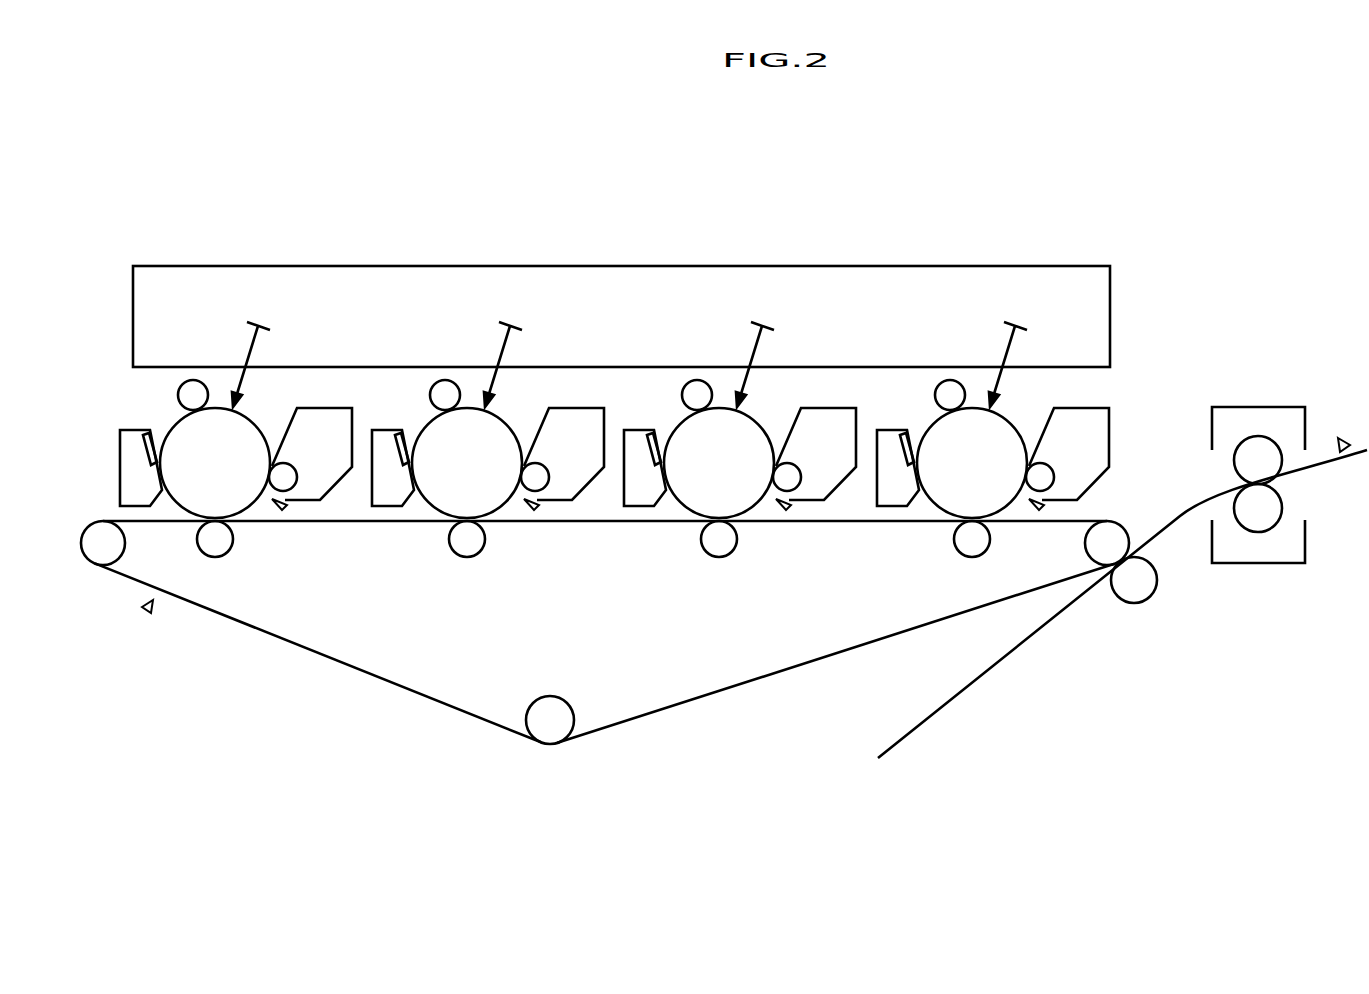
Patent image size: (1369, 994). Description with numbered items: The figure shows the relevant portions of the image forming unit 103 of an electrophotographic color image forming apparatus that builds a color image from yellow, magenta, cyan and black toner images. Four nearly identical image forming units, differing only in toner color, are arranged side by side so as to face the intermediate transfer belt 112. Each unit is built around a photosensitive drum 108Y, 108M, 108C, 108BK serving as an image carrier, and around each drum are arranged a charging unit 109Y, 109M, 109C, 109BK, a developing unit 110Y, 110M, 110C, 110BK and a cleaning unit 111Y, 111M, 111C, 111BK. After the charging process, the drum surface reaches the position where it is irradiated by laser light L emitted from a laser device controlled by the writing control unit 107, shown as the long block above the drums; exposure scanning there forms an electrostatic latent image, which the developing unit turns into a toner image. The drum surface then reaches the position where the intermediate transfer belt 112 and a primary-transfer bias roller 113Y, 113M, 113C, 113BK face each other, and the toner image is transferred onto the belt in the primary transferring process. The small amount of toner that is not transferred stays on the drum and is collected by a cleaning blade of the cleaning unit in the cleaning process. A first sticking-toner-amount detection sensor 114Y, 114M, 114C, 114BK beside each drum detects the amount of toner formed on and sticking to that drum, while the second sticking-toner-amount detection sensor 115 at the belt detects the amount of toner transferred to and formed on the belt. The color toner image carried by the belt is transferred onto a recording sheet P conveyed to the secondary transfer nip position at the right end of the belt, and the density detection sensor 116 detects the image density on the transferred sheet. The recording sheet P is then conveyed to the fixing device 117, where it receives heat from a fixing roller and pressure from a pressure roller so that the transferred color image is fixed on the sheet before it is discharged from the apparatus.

The image forming unit 103 is at (382, 757).
The writing control unit 107 is at (622, 266).
The photosensitive drum 108Y is at (215, 463).
The photosensitive drum 108M is at (467, 463).
The photosensitive drum 108C is at (719, 463).
The photosensitive drum 108BK is at (972, 463).
The charging unit 109Y is at (178, 393).
The charging unit 109M is at (430, 393).
The charging unit 109C is at (682, 393).
The charging unit 109BK is at (935, 393).
The developing unit 110Y is at (306, 416).
The developing unit 110M is at (558, 416).
The developing unit 110C is at (810, 416).
The developing unit 110BK is at (1063, 416).
The cleaning unit 111Y is at (130, 432).
The cleaning unit 111M is at (382, 432).
The cleaning unit 111C is at (634, 432).
The cleaning unit 111BK is at (887, 432).
The intermediate transfer belt 112 is at (1080, 521).
The primary-transfer bias roller 113Y is at (215, 557).
The primary-transfer bias roller 113M is at (467, 557).
The primary-transfer bias roller 113C is at (719, 557).
The primary-transfer bias roller 113BK is at (972, 557).
The first sticking-toner-amount detection sensor 114Y is at (283, 511).
The first sticking-toner-amount detection sensor 114M is at (535, 511).
The first sticking-toner-amount detection sensor 114C is at (787, 511).
The first sticking-toner-amount detection sensor 114BK is at (1040, 511).
The second sticking-toner-amount detection sensor 115 is at (130, 596).
The density detection sensor 116 is at (1320, 454).
The fixing device 117 is at (1258, 407).
The laser light L is at (253, 342).
The recording sheet P is at (943, 704).